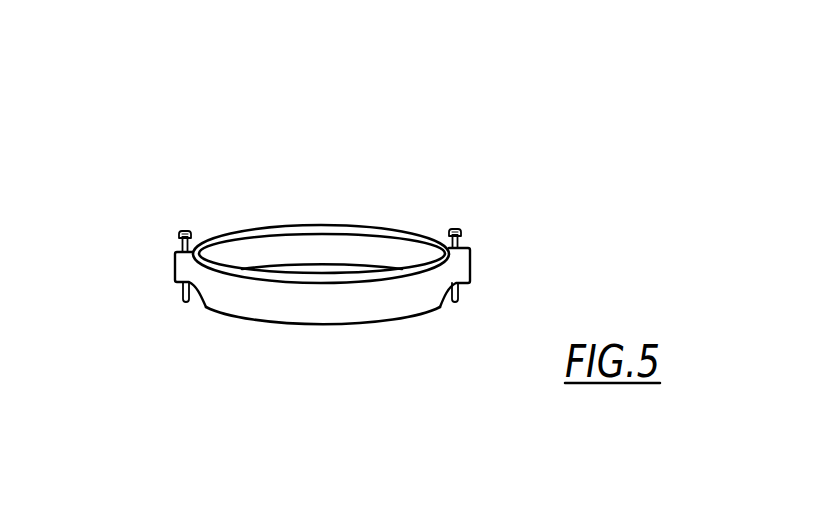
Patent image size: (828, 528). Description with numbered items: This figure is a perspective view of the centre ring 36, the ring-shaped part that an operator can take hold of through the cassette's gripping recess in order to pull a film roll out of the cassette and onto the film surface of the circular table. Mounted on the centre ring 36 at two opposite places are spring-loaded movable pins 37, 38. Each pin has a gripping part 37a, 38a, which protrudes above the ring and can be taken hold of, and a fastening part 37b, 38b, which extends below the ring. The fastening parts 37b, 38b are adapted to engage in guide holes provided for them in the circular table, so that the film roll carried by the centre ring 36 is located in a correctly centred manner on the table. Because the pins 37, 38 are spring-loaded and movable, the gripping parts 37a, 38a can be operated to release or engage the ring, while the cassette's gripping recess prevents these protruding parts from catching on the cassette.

The centre ring 36 is at (349, 203).
The spring-loaded movable pin 37 is at (158, 237).
The gripping part 37a is at (183, 231).
The fastening part 37b is at (183, 298).
The spring-loaded movable pin 38 is at (488, 229).
The gripping part 38a is at (456, 229).
The fastening part 38b is at (462, 292).